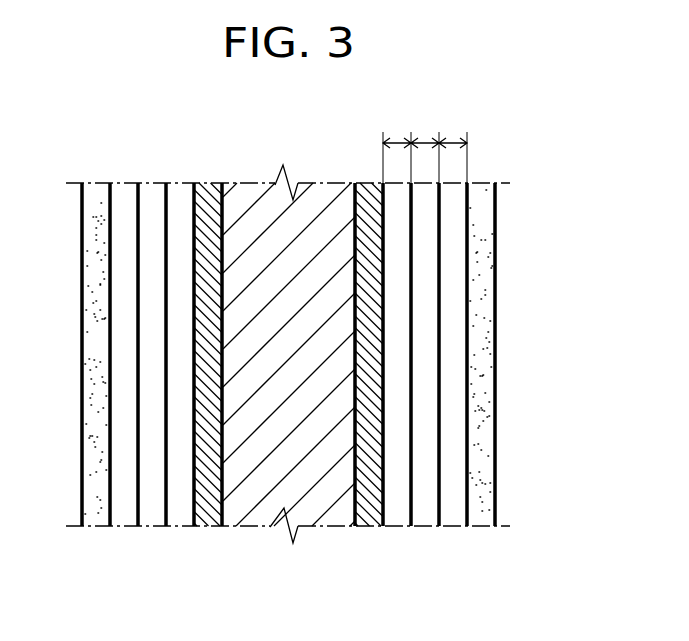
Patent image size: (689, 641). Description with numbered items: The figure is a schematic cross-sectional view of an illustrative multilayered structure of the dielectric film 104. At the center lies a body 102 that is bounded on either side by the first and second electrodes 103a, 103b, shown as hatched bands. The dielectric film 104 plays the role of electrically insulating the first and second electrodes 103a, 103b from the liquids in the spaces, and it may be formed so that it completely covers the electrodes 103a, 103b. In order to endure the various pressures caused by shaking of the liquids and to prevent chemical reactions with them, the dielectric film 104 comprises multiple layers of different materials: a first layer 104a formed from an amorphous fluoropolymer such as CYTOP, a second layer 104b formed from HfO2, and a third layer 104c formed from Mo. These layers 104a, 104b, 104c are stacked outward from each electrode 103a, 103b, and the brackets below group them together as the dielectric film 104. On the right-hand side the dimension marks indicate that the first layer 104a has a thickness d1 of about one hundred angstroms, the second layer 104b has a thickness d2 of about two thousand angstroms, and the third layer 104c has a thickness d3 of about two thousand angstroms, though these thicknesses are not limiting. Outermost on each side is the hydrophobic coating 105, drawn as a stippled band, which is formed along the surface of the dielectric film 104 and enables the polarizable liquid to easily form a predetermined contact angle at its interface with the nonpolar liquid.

The substrate 102 is at (323, 195).
The first electrode 103a is at (375, 188).
The second electrode 103b is at (207, 190).
The dielectric film 104 is at (237, 582).
The first layer 104a is at (128, 522).
The second layer 104b is at (155, 522).
The third layer 104c is at (177, 522).
The hydrophobic coating 105 is at (97, 190).
The thickness of the first layer d1 is at (397, 145).
The thickness of the second layer d2 is at (425, 145).
The thickness of the third layer d3 is at (453, 145).